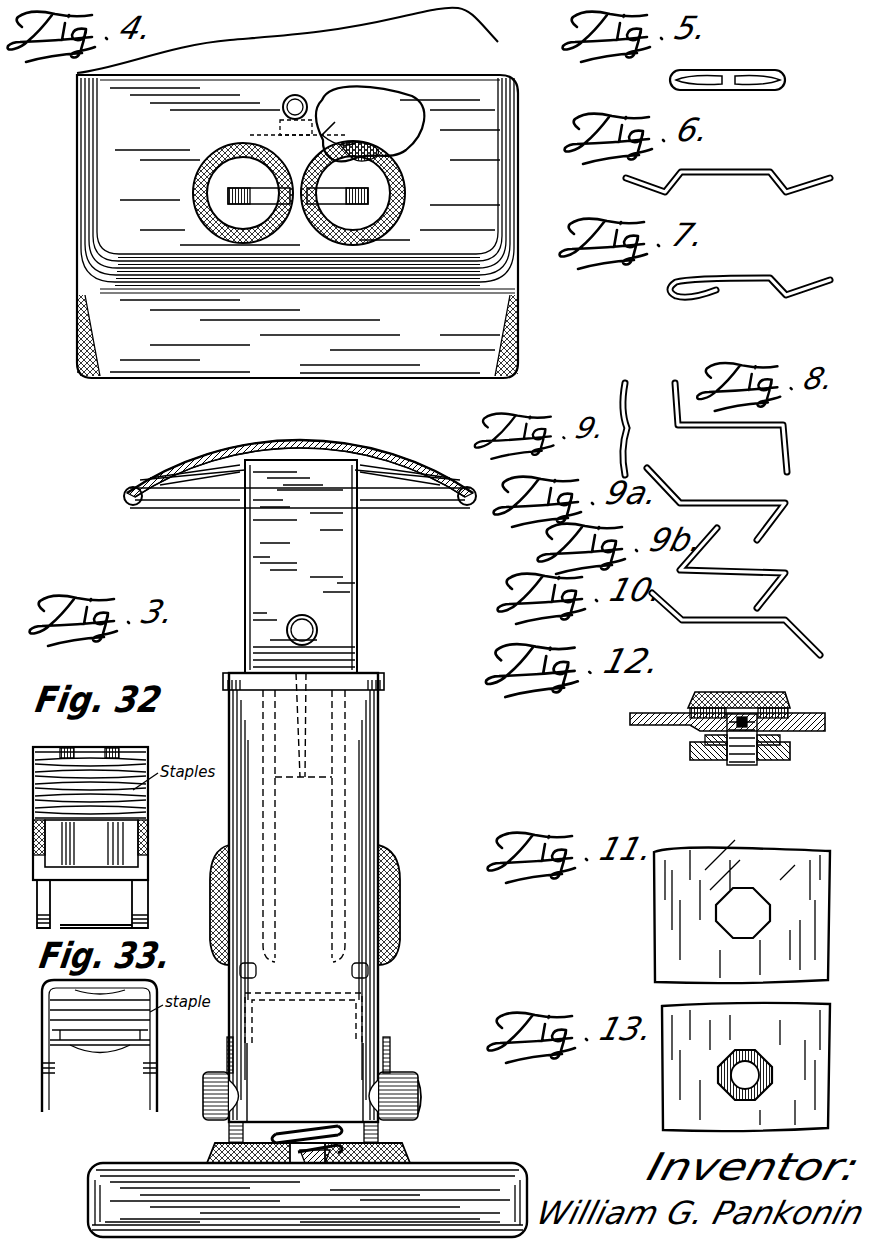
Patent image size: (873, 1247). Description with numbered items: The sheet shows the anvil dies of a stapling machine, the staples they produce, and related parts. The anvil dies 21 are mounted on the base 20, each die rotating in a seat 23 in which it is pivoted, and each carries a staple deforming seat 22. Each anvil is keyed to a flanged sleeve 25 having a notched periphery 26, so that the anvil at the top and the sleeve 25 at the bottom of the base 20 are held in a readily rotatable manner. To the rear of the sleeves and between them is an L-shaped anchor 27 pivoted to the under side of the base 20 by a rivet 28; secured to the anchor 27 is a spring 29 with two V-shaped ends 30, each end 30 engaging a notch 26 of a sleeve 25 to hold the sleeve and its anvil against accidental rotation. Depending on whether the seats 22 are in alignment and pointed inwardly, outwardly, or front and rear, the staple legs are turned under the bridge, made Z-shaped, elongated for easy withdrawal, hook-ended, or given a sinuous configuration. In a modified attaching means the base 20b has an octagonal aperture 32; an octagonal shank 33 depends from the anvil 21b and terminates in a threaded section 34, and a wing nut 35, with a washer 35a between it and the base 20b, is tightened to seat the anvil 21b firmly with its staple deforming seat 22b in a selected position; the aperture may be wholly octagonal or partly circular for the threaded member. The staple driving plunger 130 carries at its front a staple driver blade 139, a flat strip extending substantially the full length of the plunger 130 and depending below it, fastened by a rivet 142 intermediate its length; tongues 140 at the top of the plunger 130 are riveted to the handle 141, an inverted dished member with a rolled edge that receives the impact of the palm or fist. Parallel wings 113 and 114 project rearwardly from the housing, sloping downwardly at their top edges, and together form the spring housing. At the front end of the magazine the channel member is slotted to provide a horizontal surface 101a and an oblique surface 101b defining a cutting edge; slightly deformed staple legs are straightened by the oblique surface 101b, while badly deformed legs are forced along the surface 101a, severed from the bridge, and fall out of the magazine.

In FIG. 4, the base 20 is at (88, 240).
In FIG. 3, the base 20 is at (120, 1168).
In FIG. 4, the anvil die 21 is at (338, 225).
In FIG. 3, the anvil die 21 is at (408, 1153).
In FIG. 4, the staple deforming seat 22 is at (252, 188).
In FIG. 4, the die seat 23 is at (405, 238).
In FIG. 4, the flanged sleeve 25 is at (405, 150).
In FIG. 4, the notched periphery 26 is at (372, 148).
In FIG. 4, the L-shaped anchor 27 is at (286, 95).
In FIG. 4, the rivet 28 is at (300, 98).
In FIG. 4, the spring 29 is at (336, 122).
In FIG. 4, the V-shaped end 30 is at (235, 140).
In FIG. 3, the staple driving plunger 130 is at (371, 558).
In FIG. 3, the staple driver blade 139 is at (270, 555).
In FIG. 3, the projecting tongue 140 is at (316, 446).
In FIG. 3, the handle 141 is at (198, 458).
In FIG. 3, the rivet 142 is at (316, 626).
In FIG. 3, the wing 113 is at (345, 832).
In FIG. 3, the wing 114 is at (263, 816).
In FIG. 32, the horizontal surface 101a is at (143, 895).
In FIG. 32, the oblique surface 101b is at (148, 920).
In FIG. 33, the oblique surface 101b is at (150, 1068).
In FIG. 12, the staple deforming seat 22b is at (725, 692).
In FIG. 12, the octagonal shank 33 is at (746, 715).
In FIG. 12, the anvil 21b is at (787, 696).
In FIG. 12, the base 20b is at (632, 718).
In FIG. 11, the base 20b is at (660, 897).
In FIG. 12, the washer 35a is at (703, 738).
In FIG. 12, the wing nut 35 is at (792, 752).
In FIG. 12, the threaded section 34 is at (745, 766).
In FIG. 11, the octagonal aperture 32 is at (745, 905).